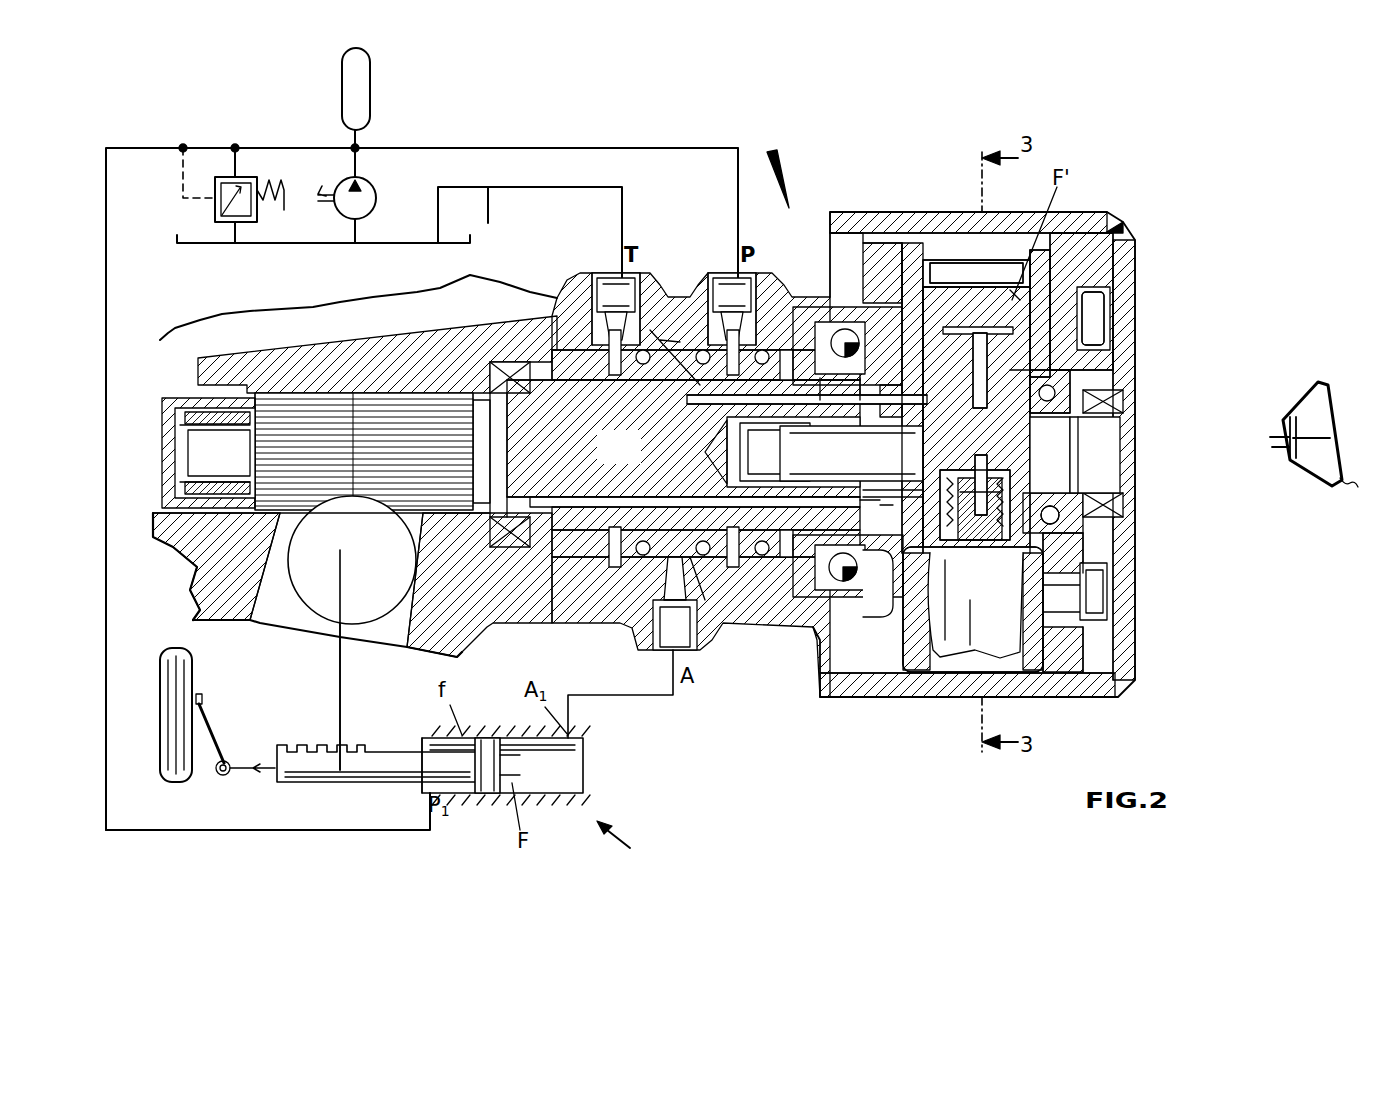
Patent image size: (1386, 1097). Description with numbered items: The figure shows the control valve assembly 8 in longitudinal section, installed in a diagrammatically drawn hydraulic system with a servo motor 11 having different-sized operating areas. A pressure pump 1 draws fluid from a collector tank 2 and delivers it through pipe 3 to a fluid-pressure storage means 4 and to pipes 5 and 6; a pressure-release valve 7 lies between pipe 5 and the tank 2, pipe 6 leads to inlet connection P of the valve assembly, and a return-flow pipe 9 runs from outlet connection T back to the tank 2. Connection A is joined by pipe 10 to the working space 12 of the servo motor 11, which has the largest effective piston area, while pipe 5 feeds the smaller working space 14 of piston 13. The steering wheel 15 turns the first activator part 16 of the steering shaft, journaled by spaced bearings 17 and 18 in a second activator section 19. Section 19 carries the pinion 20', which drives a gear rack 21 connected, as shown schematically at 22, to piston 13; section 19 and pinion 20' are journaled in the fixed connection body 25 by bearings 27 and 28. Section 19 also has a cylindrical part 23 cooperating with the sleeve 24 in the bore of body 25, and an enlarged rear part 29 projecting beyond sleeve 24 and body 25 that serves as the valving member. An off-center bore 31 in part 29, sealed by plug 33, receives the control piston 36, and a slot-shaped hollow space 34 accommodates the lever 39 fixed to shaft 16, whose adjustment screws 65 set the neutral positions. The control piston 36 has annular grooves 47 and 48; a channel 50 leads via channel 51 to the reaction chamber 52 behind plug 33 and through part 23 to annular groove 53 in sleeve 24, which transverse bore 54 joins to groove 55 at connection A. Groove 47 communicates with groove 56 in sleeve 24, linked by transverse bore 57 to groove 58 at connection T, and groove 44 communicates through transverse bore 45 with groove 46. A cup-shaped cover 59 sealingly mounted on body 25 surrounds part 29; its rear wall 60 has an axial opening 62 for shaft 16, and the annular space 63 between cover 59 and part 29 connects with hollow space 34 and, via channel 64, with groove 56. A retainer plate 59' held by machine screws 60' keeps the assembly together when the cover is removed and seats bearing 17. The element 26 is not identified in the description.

The pressure pump 1 is at (372, 196).
The collector tank 2 is at (368, 246).
The pipe 3 is at (360, 165).
The fluid-pressure storage means 4 is at (372, 80).
The pipe 5 is at (283, 147).
The pipe 6 is at (408, 147).
The pressure-release valve 7 is at (214, 211).
The control valve assembly 8 is at (1061, 314).
The return-flow pipe 9 is at (530, 238).
The pipe 10 is at (620, 694).
The servo motor 11 is at (1228, 545).
The working space 12 is at (575, 767).
The piston 13 is at (489, 782).
The working space 14 is at (458, 785).
The steering wheel 15 is at (1322, 437).
The activator shaft 16 is at (1093, 457).
The bearing 17 is at (1025, 365).
The bearing 18 is at (783, 490).
The activator section 19 is at (615, 300).
The pinion 20' is at (338, 398).
The gear rack 21 is at (307, 546).
The operative connection 22 is at (337, 681).
The cylindrical part 23 is at (636, 459).
The sleeve 24 is at (567, 345).
The connection body 25 is at (687, 317).
The pressure port fitting 26 is at (703, 300).
The bearing 27 is at (845, 325).
The bearing 28 is at (205, 412).
The valving member 29 is at (978, 664).
The bore 31 is at (1118, 240).
The plug 33 is at (1040, 262).
The slot-shaped hollow space 34 is at (895, 617).
The control piston 36 is at (1080, 345).
The lever 39 is at (990, 475).
The annular groove 44 is at (792, 348).
The transverse bore 45 is at (766, 340).
The annular groove 46 is at (757, 333).
The annular groove 47 is at (950, 287).
The annular groove 48 is at (940, 265).
The channel 50 is at (690, 402).
The channel 51 is at (1055, 385).
The reaction chamber 52 is at (960, 262).
The annular groove 53 is at (660, 300).
The transverse bore 54 is at (703, 560).
The annular groove 55 is at (665, 395).
The annular groove 56 is at (557, 333).
The transverse bore 57 is at (600, 560).
The annular groove 58 is at (615, 560).
The cover 59 is at (892, 334).
The retainer plate 59' is at (1140, 309).
The rear plate 60 is at (1154, 300).
The machine screws 60' is at (1130, 591).
The axial opening 62 is at (1127, 410).
The annular space 63 is at (1097, 633).
The channel 64 is at (890, 505).
The adjustment screws 65 is at (1063, 640).